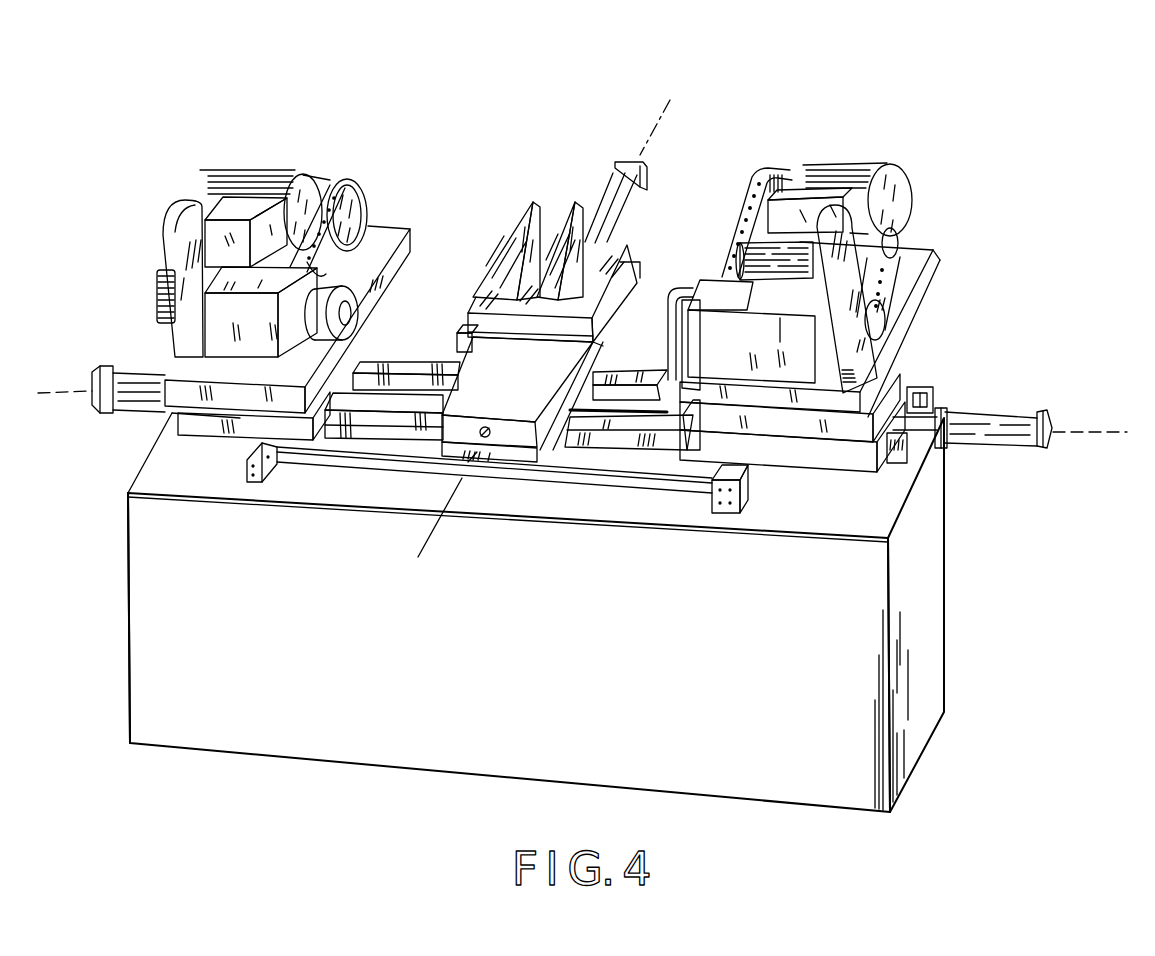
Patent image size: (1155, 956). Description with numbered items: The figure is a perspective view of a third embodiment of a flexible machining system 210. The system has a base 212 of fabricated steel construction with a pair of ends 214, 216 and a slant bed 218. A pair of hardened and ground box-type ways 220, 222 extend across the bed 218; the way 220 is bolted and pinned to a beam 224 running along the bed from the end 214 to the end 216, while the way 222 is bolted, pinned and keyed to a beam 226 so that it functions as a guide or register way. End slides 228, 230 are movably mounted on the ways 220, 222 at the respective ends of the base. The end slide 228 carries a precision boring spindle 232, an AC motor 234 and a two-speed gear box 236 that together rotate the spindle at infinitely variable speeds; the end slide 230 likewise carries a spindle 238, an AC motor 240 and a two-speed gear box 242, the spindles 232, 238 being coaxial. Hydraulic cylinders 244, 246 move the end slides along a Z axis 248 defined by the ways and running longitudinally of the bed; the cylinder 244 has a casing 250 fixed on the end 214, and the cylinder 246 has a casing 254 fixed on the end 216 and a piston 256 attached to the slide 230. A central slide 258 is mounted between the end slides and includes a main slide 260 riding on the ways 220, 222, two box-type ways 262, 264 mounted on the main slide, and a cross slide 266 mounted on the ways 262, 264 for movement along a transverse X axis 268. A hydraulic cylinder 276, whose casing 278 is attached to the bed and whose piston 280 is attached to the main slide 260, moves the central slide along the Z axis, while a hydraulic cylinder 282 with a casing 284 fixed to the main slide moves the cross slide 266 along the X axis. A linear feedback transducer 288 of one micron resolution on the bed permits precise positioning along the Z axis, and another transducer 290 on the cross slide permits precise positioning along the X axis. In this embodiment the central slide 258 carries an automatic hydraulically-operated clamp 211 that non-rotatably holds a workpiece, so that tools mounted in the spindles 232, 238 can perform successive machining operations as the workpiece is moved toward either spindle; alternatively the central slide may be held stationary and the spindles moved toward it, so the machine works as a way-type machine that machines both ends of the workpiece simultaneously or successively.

The flexible machining system 210 is at (929, 152).
The automatic hydraulically-operated clamp 211 is at (557, 223).
The base 212 is at (458, 762).
The end 214 is at (128, 593).
The end 216 is at (923, 590).
The slant bed 218 is at (797, 515).
The way 220 is at (414, 368).
The way 222 is at (640, 450).
The beam 224 is at (922, 385).
The beam 226 is at (913, 447).
The end slide 228 is at (163, 415).
The end slide 230 is at (933, 297).
The spindle 232 is at (357, 302).
The AC motor 234 is at (322, 183).
The two-speed gear box 236 is at (237, 200).
The spindle 238 is at (669, 293).
The AC motor 240 is at (837, 162).
The two-speed gear box 242 is at (778, 190).
The hydraulic cylinder 244 is at (106, 370).
The hydraulic cylinder 246 is at (1043, 412).
The Z axis 248 is at (1100, 432).
The casing 250 is at (152, 368).
The casing 254 is at (992, 410).
The piston 256 is at (943, 407).
The central slide 258 is at (540, 192).
The main slide 260 is at (500, 410).
The way 262 is at (447, 400).
The way 264 is at (603, 345).
The cross slide 266 is at (640, 268).
The X axis 268 is at (670, 102).
The hydraulic cylinder 276 is at (658, 402).
The casing 278 is at (683, 420).
The piston 280 is at (582, 437).
The hydraulic cylinder 282 is at (633, 160).
The casing 284 is at (612, 178).
The linear feedback transducer 288 is at (303, 463).
The linear feedback transducer 290 is at (460, 340).